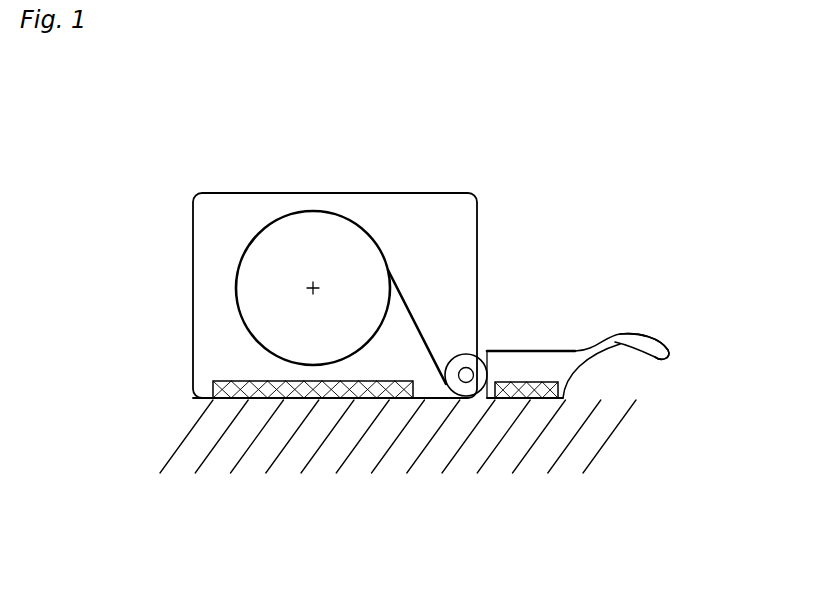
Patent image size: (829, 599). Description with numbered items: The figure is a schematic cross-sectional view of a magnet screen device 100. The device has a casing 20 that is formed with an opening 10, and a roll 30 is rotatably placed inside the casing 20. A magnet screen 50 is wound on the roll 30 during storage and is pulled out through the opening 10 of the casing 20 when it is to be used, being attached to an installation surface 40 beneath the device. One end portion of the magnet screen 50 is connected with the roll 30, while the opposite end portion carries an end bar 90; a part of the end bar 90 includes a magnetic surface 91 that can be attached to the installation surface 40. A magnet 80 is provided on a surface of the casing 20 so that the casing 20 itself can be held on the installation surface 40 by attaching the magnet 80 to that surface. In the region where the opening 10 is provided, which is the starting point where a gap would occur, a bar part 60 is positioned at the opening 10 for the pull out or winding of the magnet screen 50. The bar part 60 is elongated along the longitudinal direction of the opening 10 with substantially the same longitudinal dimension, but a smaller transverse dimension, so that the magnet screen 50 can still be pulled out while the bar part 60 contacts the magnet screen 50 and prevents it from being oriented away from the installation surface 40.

The magnet screen device 100 is at (509, 163).
The opening 10 is at (440, 390).
The casing 20 is at (193, 284).
The roll 30 is at (268, 329).
The installation surface 40 is at (600, 435).
The magnet screen 50 is at (415, 322).
The bar part 60 is at (476, 360).
The magnet 80 is at (297, 390).
The end bar 90 is at (615, 342).
The magnetic surface 91 is at (527, 395).